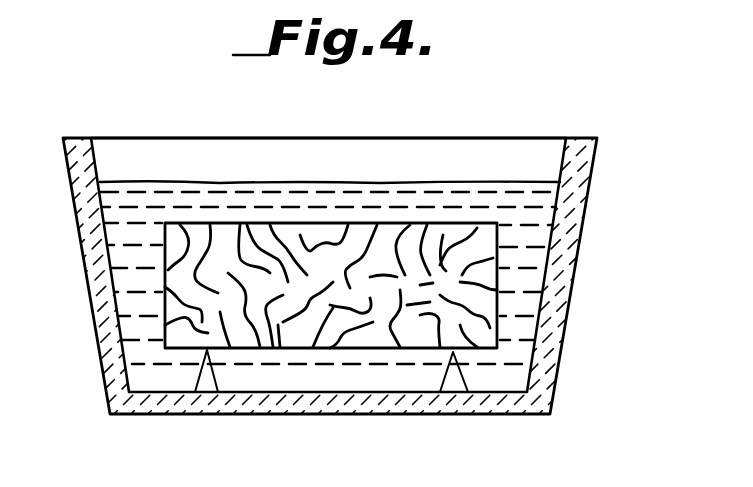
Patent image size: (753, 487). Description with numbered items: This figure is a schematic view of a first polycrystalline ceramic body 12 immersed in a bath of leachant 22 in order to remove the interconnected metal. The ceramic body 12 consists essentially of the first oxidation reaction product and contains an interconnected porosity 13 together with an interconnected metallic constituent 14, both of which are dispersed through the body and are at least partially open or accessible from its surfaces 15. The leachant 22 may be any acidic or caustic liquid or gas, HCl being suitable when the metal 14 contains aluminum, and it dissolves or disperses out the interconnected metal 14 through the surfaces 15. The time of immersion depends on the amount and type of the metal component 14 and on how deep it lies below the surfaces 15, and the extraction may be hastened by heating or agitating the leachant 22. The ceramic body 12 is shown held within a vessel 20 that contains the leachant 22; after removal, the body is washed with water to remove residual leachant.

The first polycrystalline ceramic body 12 is at (341, 221).
The interconnected porosity 13 is at (310, 225).
The interconnected metallic constituent 14 is at (165, 300).
The surfaces 15 is at (395, 227).
The container 20 is at (570, 246).
The leachant 22 is at (140, 200).